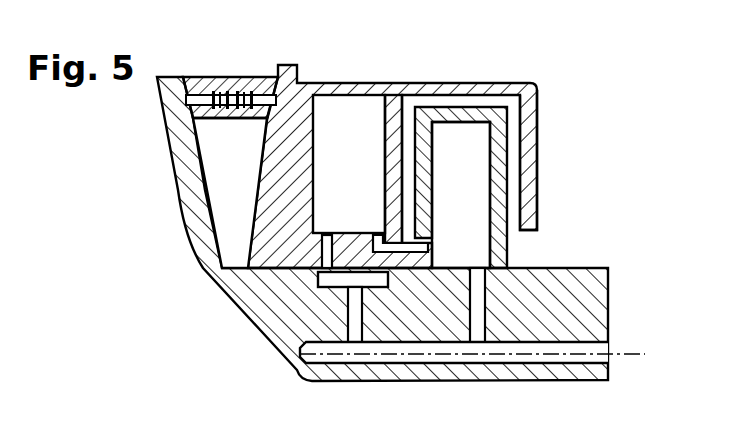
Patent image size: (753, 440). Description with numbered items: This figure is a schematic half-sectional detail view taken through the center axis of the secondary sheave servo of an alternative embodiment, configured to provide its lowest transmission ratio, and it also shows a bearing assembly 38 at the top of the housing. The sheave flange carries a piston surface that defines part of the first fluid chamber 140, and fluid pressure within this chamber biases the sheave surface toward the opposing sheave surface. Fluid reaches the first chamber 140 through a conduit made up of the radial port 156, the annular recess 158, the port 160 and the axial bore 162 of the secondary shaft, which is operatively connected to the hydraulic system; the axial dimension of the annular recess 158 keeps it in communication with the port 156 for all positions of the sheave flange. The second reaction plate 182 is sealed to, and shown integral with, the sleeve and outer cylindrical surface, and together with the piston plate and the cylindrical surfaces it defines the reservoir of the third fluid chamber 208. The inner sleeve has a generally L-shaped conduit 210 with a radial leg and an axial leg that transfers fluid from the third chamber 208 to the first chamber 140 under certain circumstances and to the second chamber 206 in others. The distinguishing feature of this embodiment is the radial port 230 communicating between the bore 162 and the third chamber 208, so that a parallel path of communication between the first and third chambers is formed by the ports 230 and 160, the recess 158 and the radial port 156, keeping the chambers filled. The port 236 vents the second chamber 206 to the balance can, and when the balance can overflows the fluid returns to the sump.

The bearing assembly 38 is at (227, 77).
The first fluid chamber 140 is at (347, 131).
The port 236 is at (407, 122).
The second chamber 206 is at (407, 177).
The third fluid chamber 208 is at (460, 197).
The second reaction plate 182 is at (510, 247).
The port 156 is at (323, 233).
The L-shaped conduit 210 is at (379, 239).
The annular recess 158 is at (322, 275).
The port 160 is at (354, 330).
The radial port 230 is at (477, 325).
The axial bore 162 is at (610, 360).